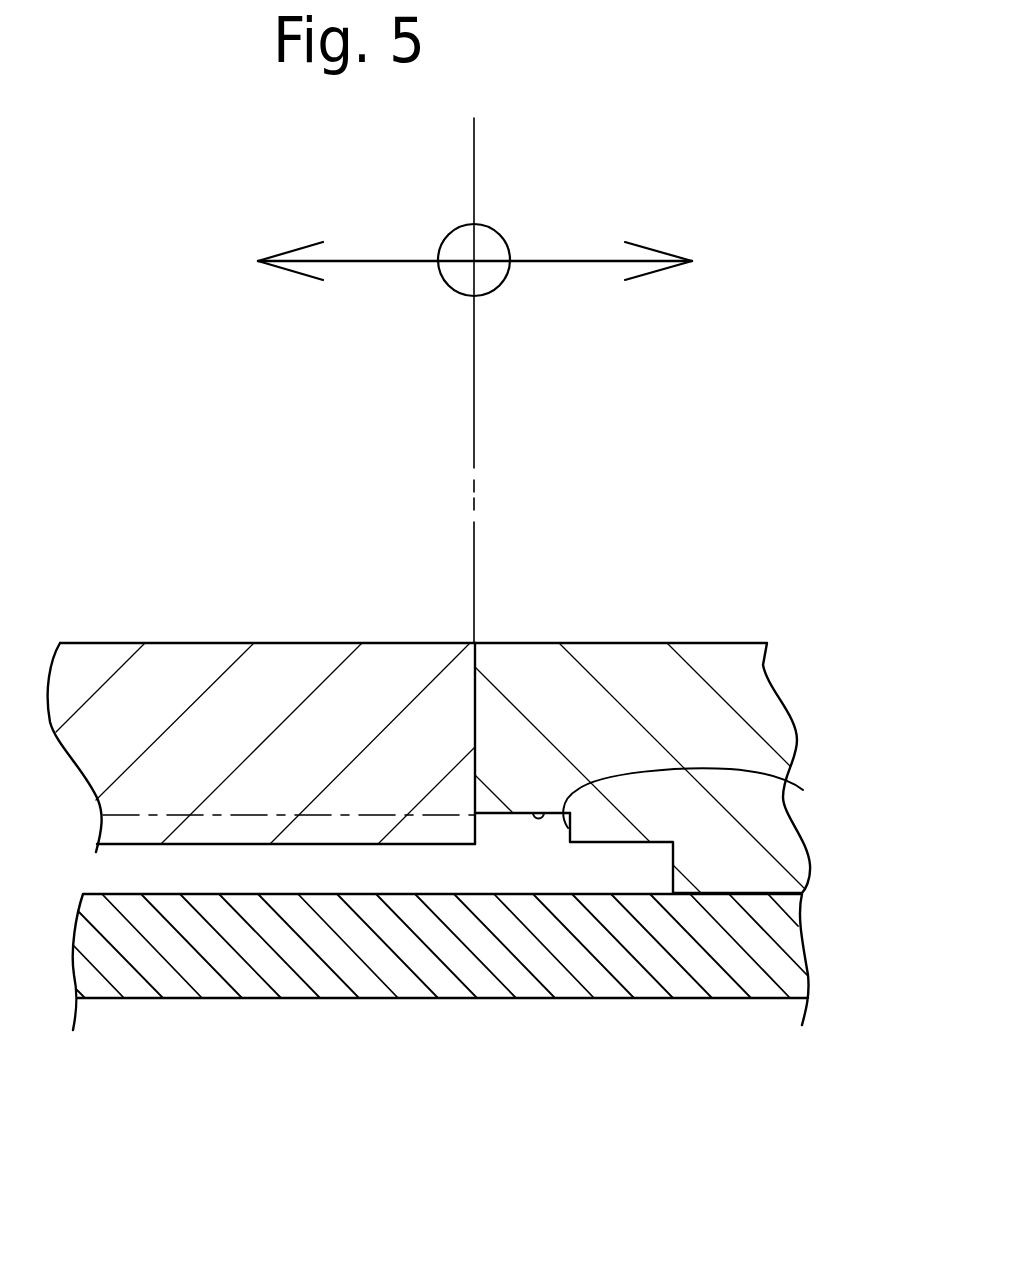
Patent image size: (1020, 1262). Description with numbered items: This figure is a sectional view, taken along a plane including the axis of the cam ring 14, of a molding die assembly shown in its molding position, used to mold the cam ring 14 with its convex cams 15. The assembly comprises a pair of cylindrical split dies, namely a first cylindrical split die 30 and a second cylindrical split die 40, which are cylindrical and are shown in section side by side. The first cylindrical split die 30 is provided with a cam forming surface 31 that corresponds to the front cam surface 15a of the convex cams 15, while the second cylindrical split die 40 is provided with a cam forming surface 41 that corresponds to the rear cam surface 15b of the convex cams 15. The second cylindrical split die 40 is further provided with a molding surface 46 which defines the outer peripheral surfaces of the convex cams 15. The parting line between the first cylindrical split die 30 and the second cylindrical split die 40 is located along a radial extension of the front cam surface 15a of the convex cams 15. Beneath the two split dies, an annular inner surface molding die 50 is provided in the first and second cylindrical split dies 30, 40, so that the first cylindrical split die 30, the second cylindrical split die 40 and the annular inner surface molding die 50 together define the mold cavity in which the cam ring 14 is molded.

The first cylindrical split die 30 is at (265, 685).
The cam forming surface 31 is at (559, 668).
The front cam surface 15a is at (581, 512).
The molding surface 46 is at (533, 813).
The second cylindrical split die 40 is at (719, 667).
The cam forming surface 41 is at (722, 830).
The rear cam surface 15b is at (847, 829).
The cam ring 14 is at (347, 873).
The convex cam 15 is at (510, 827).
The annular inner surface molding die 50 is at (647, 977).